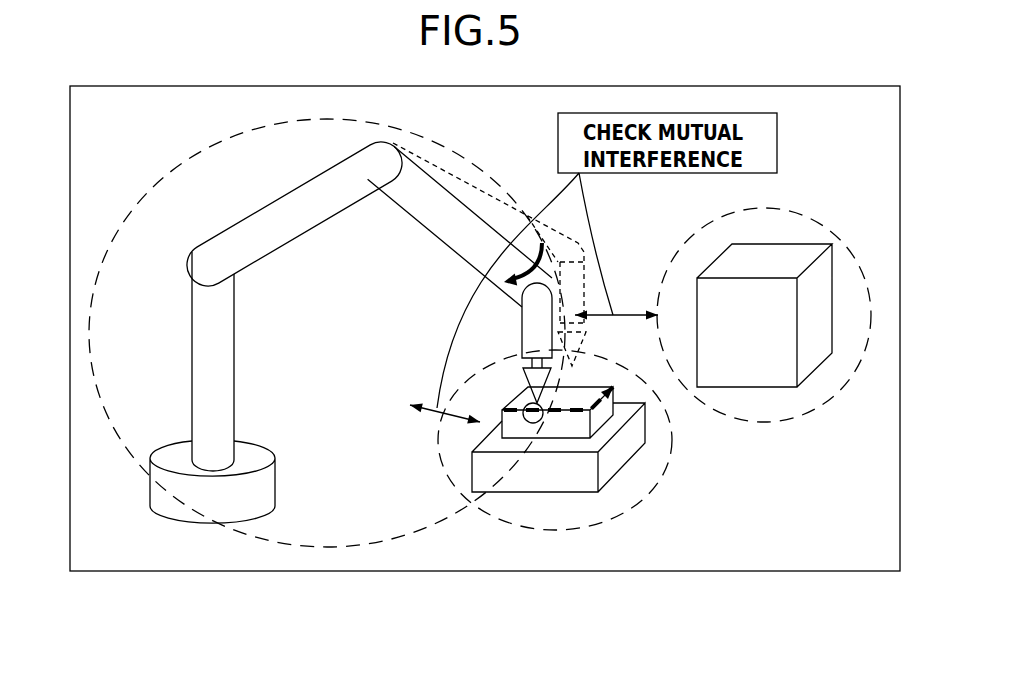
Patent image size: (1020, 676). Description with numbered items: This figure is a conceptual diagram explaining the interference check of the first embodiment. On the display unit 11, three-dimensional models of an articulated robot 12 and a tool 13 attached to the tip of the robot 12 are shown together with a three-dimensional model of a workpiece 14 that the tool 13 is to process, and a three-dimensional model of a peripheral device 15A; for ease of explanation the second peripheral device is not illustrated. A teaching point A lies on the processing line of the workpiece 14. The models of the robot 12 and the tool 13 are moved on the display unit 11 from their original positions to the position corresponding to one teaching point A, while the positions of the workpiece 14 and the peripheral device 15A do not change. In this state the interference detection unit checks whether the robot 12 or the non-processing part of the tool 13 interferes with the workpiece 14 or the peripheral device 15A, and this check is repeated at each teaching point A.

The display unit 11 is at (539, 572).
The robot 12 is at (318, 240).
The tool 13 is at (538, 332).
The workpiece 14 is at (572, 478).
The peripheral device 15A is at (786, 258).
The teaching point A is at (528, 418).